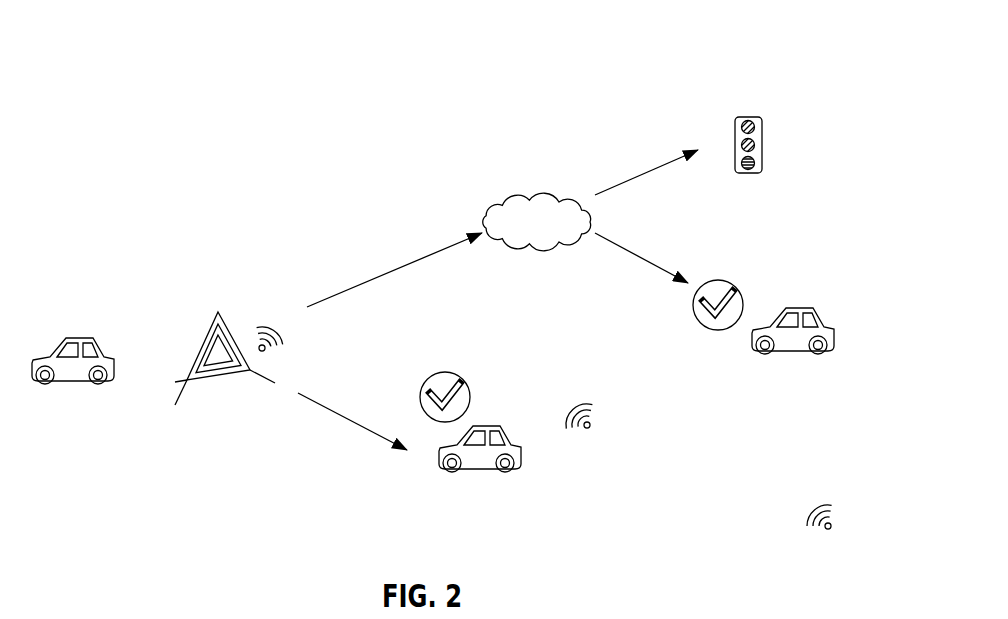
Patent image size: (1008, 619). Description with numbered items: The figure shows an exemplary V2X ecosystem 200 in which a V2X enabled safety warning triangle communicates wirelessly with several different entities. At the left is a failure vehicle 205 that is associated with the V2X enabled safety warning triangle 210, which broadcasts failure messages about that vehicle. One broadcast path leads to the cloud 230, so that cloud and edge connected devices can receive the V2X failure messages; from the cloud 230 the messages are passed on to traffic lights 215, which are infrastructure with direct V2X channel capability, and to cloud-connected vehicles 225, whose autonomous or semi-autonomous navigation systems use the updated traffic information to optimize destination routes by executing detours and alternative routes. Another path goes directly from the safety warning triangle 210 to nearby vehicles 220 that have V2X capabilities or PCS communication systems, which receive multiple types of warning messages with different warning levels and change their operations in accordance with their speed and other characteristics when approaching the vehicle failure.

The V2X ecosystem 200 is at (817, 35).
The failure vehicle 205 is at (80, 338).
The V2X enabled safety warning triangle 210 is at (205, 338).
The traffic lights 215 is at (762, 144).
The vehicles with V2X capabilities 220 is at (490, 427).
The cloud-connected vehicles 225 is at (810, 308).
The cloud 230 is at (537, 200).